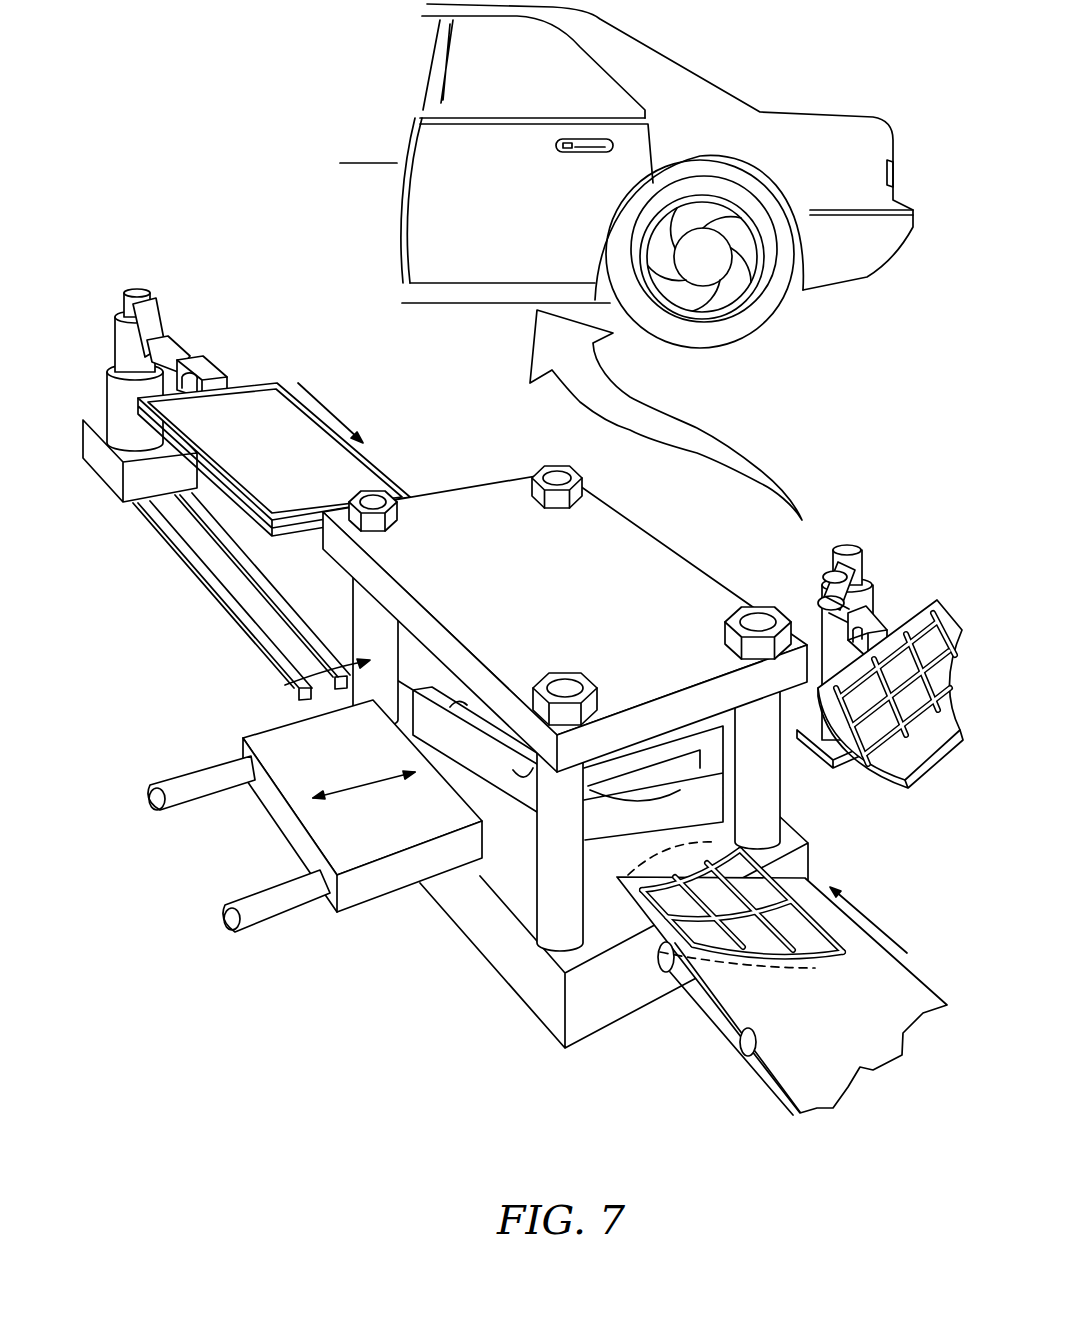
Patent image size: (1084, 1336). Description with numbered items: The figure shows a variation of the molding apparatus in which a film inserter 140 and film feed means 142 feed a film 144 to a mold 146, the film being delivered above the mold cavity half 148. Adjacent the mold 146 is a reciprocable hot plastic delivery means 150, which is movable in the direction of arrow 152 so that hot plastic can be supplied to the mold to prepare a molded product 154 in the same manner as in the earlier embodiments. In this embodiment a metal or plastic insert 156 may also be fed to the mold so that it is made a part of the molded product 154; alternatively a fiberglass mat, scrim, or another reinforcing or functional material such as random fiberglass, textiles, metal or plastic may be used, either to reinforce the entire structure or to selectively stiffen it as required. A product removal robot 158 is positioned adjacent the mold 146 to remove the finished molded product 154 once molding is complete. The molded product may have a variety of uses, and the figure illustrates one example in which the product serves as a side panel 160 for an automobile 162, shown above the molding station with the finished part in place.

The film inserter 140 is at (152, 314).
The film feed means 142 is at (212, 368).
The film 144 is at (257, 405).
The mold 146 is at (299, 692).
The mold cavity half 148 is at (520, 830).
The reciprocable hot plastic delivery means 150 is at (387, 897).
The arrow 152 is at (368, 782).
The molded product 154 is at (947, 643).
The metal or plastic insert 156 is at (773, 880).
The product removal robot 158 is at (877, 590).
The side panel 160 is at (506, 228).
The automobile 162 is at (626, 176).